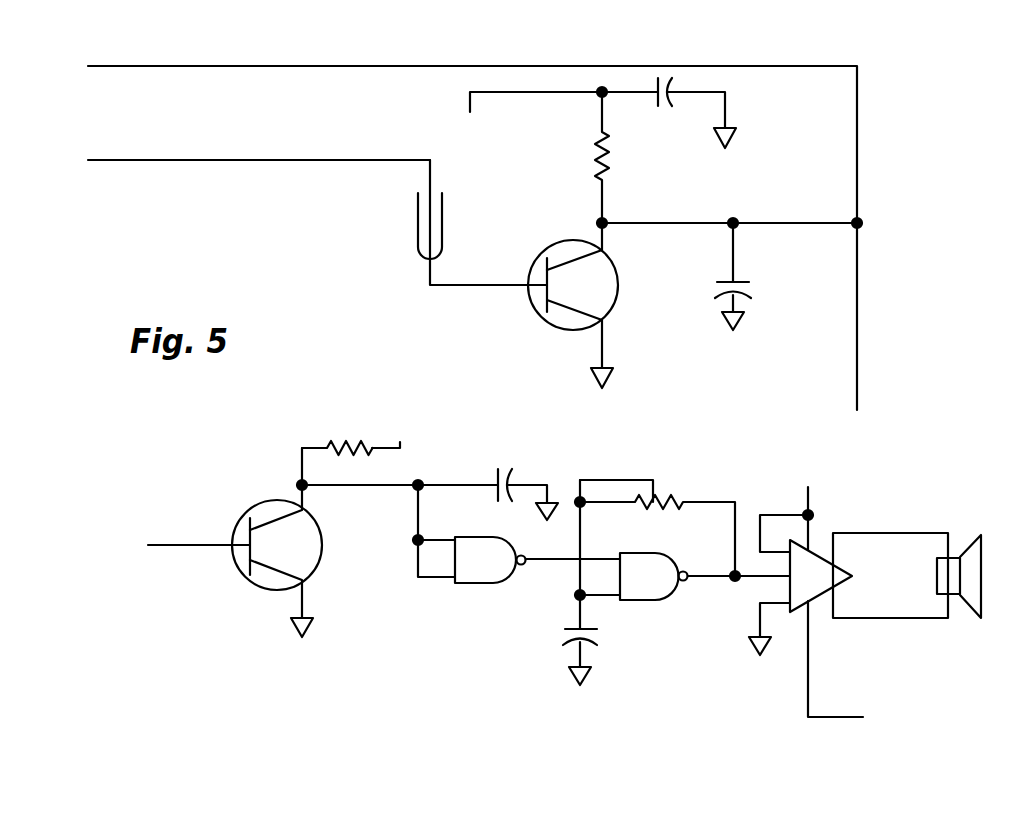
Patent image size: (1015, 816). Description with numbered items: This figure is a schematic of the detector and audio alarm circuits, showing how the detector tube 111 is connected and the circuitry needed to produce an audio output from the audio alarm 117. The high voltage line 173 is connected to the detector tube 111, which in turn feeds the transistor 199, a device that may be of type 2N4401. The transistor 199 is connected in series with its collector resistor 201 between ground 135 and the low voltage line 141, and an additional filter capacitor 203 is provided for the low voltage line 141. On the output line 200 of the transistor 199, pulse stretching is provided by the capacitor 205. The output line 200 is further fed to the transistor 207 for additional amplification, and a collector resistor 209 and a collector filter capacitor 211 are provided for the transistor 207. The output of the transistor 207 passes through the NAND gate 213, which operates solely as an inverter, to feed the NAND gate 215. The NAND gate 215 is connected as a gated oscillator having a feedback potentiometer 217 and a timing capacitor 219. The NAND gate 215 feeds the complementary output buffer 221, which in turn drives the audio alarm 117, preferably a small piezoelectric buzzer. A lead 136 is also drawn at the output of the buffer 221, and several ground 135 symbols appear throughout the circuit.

The output line 200 is at (112, 66).
The high voltage line 173 is at (126, 160).
The detector tube 111 is at (417, 242).
The low voltage line 141 is at (488, 92).
The collector resistor 201 is at (607, 172).
The filter capacitor 203 is at (671, 84).
The transistor 199 is at (605, 273).
The capacitor 205 is at (749, 282).
The transistor 207 is at (321, 556).
The collector resistor 209 is at (374, 445).
The collector filter capacitor 211 is at (514, 482).
The NAND gate 213 is at (462, 584).
The feedback potentiometer 217 is at (693, 500).
The NAND gate 215 is at (640, 553).
The timing capacitor 219 is at (589, 630).
The complementary output buffer 221 is at (812, 558).
The output lead 136 is at (837, 717).
The audio alarm 117 is at (978, 546).
The ground 135 is at (728, 146).